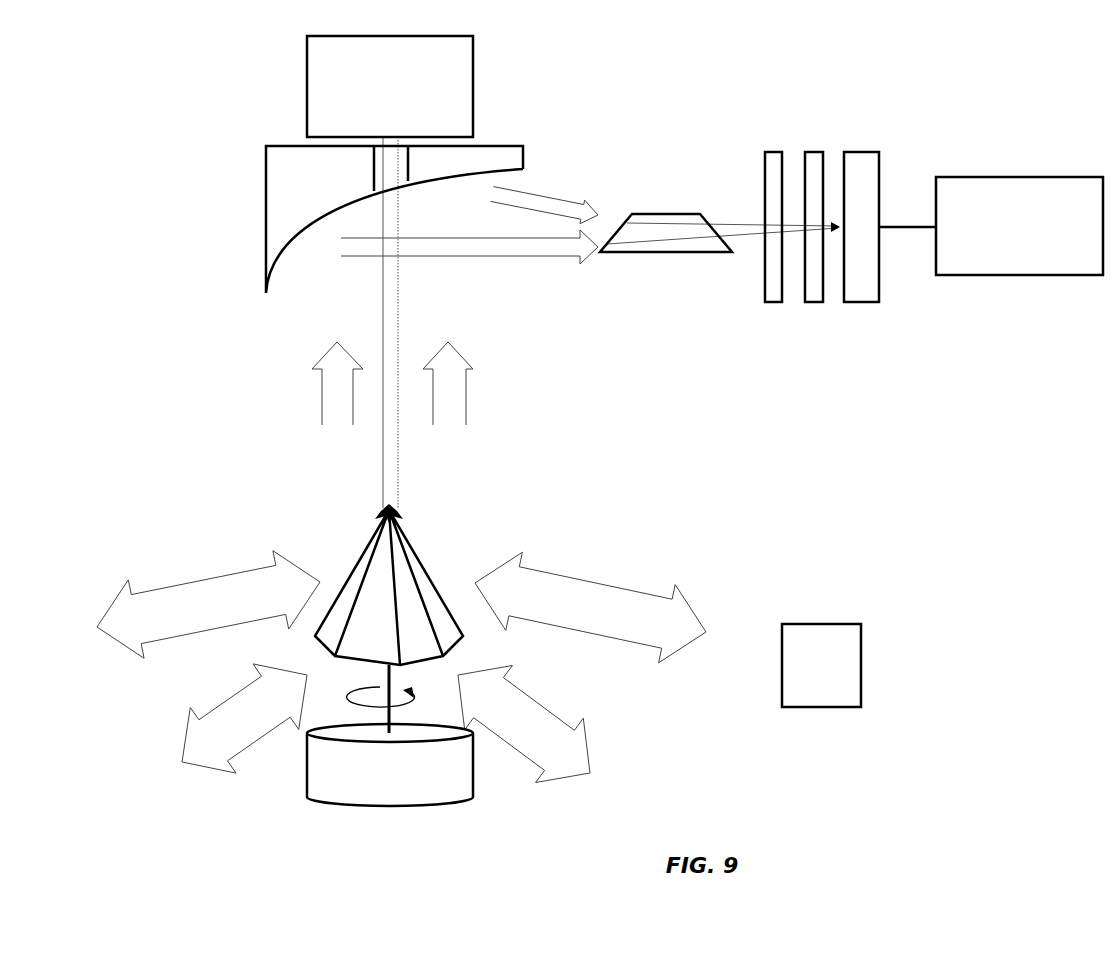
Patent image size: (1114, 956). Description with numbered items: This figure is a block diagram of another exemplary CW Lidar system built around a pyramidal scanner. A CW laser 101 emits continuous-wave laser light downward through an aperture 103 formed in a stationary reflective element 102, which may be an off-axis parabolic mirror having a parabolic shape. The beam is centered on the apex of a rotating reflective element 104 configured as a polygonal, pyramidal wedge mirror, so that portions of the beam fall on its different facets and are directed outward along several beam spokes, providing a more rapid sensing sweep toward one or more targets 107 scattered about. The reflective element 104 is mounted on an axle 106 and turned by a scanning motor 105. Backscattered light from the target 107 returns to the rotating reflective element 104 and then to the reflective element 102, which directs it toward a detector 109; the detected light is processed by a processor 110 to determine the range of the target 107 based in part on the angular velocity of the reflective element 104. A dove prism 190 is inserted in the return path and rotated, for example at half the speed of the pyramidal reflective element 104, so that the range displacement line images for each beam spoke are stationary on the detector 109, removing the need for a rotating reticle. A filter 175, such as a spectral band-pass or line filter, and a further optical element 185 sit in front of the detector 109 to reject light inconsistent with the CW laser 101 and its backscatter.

The CW laser 101 is at (390, 86).
The reflective element 102 is at (289, 146).
The aperture 103 is at (402, 177).
The reflective element 104 is at (366, 556).
The scanning motor 105 is at (307, 770).
The axle 106 is at (383, 720).
The target 107 is at (821, 665).
The detector 109 is at (865, 152).
The processor 110 is at (991, 226).
The filter 175 is at (815, 152).
The lens plate 185 is at (772, 152).
The dove prism 190 is at (703, 217).